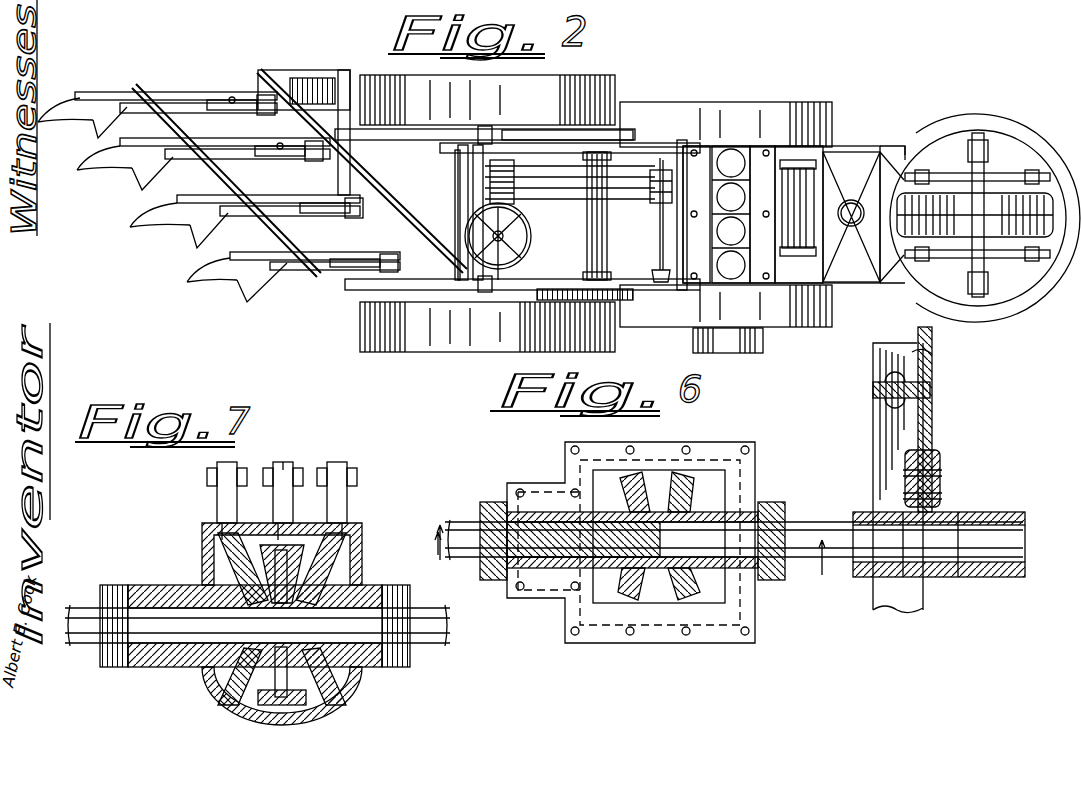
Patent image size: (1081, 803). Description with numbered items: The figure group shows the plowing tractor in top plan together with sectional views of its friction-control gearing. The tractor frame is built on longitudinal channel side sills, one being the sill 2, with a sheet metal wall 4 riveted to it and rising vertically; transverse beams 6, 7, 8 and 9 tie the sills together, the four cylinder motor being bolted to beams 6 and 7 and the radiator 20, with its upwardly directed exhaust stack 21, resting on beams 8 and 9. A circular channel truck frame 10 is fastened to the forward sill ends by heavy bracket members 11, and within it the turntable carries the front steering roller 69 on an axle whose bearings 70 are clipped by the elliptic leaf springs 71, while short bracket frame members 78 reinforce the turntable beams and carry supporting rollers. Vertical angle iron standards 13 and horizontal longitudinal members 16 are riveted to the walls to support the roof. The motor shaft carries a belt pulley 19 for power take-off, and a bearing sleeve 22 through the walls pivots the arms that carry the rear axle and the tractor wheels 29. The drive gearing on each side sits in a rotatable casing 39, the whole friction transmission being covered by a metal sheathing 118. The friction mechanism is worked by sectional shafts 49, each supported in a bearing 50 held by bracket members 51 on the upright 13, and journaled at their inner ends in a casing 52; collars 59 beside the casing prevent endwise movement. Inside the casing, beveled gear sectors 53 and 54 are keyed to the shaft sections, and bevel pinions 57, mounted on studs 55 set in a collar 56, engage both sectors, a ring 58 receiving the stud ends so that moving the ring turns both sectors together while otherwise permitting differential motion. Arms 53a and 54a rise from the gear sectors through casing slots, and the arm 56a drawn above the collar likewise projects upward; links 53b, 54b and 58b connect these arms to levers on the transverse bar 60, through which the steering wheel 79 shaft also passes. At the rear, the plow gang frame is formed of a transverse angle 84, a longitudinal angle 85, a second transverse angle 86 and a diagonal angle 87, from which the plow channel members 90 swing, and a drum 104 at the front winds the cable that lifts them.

In FIG. 6, the channel side sill 2 is at (898, 478).
In FIG. 6, the sheet metal wall 4 is at (932, 362).
In FIG. 2, the transverse beam 6 is at (660, 238).
In FIG. 2, the transverse beam 7 is at (765, 146).
In FIG. 7, the transverse beam 7 is at (435, 556).
In FIG. 6, the transverse beam 7 is at (632, 561).
In FIG. 2, the transverse beam 8 is at (872, 150).
In FIG. 2, the transverse beam 9 is at (885, 148).
In FIG. 2, the circular channel truck frame 10 is at (1030, 160).
In FIG. 2, the bracket member 11 is at (912, 130).
In FIG. 6, the vertical angle iron standard 13 is at (920, 365).
In FIG. 2, the horizontal longitudinal member 16 is at (532, 290).
In FIG. 2, the belt pulley 19 is at (764, 343).
In FIG. 2, the radiator 20 is at (851, 217).
In FIG. 2, the stack 21 is at (845, 222).
In FIG. 2, the bearing sleeve 22 is at (608, 234).
In FIG. 2, the tractor wheel 29 is at (616, 84).
In FIG. 2, the casing 39 is at (545, 294).
In FIG. 2, the sectional shaft 49 is at (661, 258).
In FIG. 7, the sectional shaft 49 is at (85, 640).
In FIG. 6, the sectional shaft 49 is at (492, 585).
In FIG. 6, the bearing 50 is at (950, 512).
In FIG. 6, the bracket member 51 is at (932, 422).
In FIG. 7, the casing 52 is at (200, 580).
In FIG. 6, the casing 52 is at (664, 632).
In FIG. 7, the beveled gear sector 53 is at (240, 680).
In FIG. 6, the beveled gear sector 53 is at (630, 600).
In FIG. 7, the upwardly directed arm 53a is at (228, 500).
In FIG. 7, the link 53b is at (222, 462).
In FIG. 7, the beveled gear sector 54 is at (335, 680).
In FIG. 6, the beveled gear sector 54 is at (690, 600).
In FIG. 7, the upwardly directed arm 54a is at (340, 510).
In FIG. 7, the link 54b is at (350, 466).
In FIG. 7, the stud 55 is at (300, 540).
In FIG. 7, the collar 56 is at (268, 540).
In FIG. 6, the collar 56 is at (657, 491).
In FIG. 7, the fork arm 56a is at (300, 495).
In FIG. 7, the bevel pinion 57 is at (352, 566).
In FIG. 7, the annular member or ring 58 is at (283, 480).
In FIG. 7, the link 58b is at (283, 480).
In FIG. 2, the collar 59 is at (580, 135).
In FIG. 7, the collar 59 is at (112, 585).
In FIG. 6, the collar 59 is at (492, 502).
In FIG. 2, the transverse bar 60 is at (514, 262).
In FIG. 2, the steering wheel or roller 69 is at (975, 215).
In FIG. 2, the bearing 70 is at (983, 176).
In FIG. 2, the elliptic leaf spring 71 is at (958, 258).
In FIG. 2, the bracket frame member 78 is at (988, 160).
In FIG. 2, the steering wheel 79 is at (522, 222).
In FIG. 2, the transverse angle 84 is at (456, 204).
In FIG. 2, the longitudinal angle 85 is at (412, 160).
In FIG. 2, the transverse angle 86 is at (350, 132).
In FIG. 2, the diagonal angle 87 is at (405, 222).
In FIG. 2, the channel member 90 is at (196, 104).
In FIG. 2, the drum 104 is at (800, 200).
In FIG. 2, the metal housing or sheathing 118 is at (726, 214).